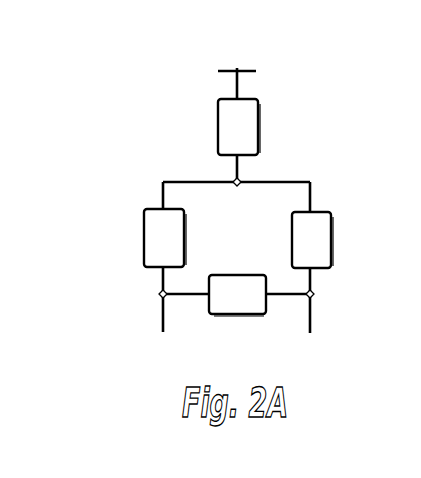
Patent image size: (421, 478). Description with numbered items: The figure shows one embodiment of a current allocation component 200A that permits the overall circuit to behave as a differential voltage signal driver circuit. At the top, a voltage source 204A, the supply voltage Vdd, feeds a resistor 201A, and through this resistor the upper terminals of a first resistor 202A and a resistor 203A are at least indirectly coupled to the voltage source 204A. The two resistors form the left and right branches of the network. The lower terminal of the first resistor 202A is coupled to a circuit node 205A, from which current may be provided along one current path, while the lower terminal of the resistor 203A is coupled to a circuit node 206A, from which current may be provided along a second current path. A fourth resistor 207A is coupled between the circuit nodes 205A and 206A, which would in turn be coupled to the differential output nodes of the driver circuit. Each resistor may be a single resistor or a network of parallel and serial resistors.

The current allocation component 200A is at (189, 128).
The resistor 201A is at (259, 127).
The first resistor 202A is at (143, 240).
The resistor 203A is at (332, 238).
The voltage source 204A is at (238, 70).
The circuit node 205A is at (162, 315).
The circuit node 206A is at (311, 317).
The fourth resistor 207A is at (237, 315).